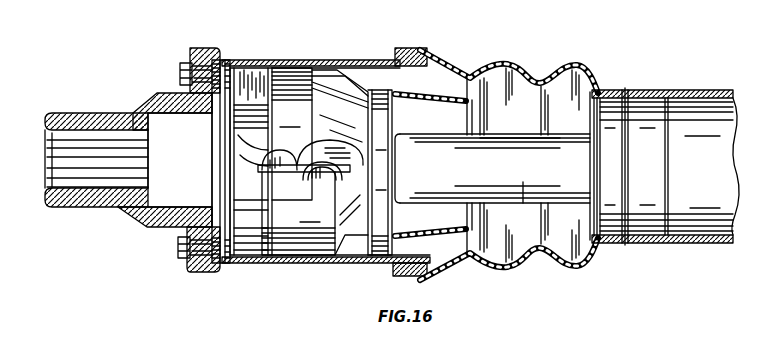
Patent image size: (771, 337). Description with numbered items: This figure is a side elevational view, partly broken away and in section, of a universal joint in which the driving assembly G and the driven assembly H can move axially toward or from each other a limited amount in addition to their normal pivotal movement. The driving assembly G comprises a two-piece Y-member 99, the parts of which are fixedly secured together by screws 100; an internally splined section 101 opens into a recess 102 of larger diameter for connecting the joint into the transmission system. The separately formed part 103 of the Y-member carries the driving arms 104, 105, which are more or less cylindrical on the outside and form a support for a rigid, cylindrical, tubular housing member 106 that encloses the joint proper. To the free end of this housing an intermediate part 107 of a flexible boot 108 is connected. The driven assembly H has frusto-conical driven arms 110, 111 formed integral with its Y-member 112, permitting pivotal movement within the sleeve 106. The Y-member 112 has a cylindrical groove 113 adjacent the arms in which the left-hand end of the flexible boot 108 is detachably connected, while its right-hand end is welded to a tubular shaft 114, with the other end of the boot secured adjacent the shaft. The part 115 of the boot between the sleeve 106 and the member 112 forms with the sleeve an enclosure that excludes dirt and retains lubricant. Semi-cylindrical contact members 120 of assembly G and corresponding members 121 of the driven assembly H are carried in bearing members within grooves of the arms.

The Y-member 99 is at (116, 113).
The screws 100 is at (178, 63).
The internally splined section 101 is at (82, 183).
The recess 102 is at (165, 197).
The separately formed part 103 is at (215, 147).
The driving arm 104 is at (265, 245).
The driving arm 105 is at (256, 70).
The tubular housing member 106 is at (355, 62).
The intermediate part of flexible boot 107 is at (410, 52).
The flexible boot 108 is at (512, 64).
The driven arm 110 is at (318, 82).
The driven arm 111 is at (352, 235).
The Y-member 112 is at (525, 135).
The cylindrical groove 113 is at (492, 168).
The tubular shaft 114 is at (700, 90).
The part of flexible boot 115 is at (440, 215).
The semi-cylindrical contact members 120 is at (320, 175).
The semi-cylindrical contact members 121 is at (300, 150).
The driving assembly G is at (156, 84).
The driven assembly H is at (523, 185).